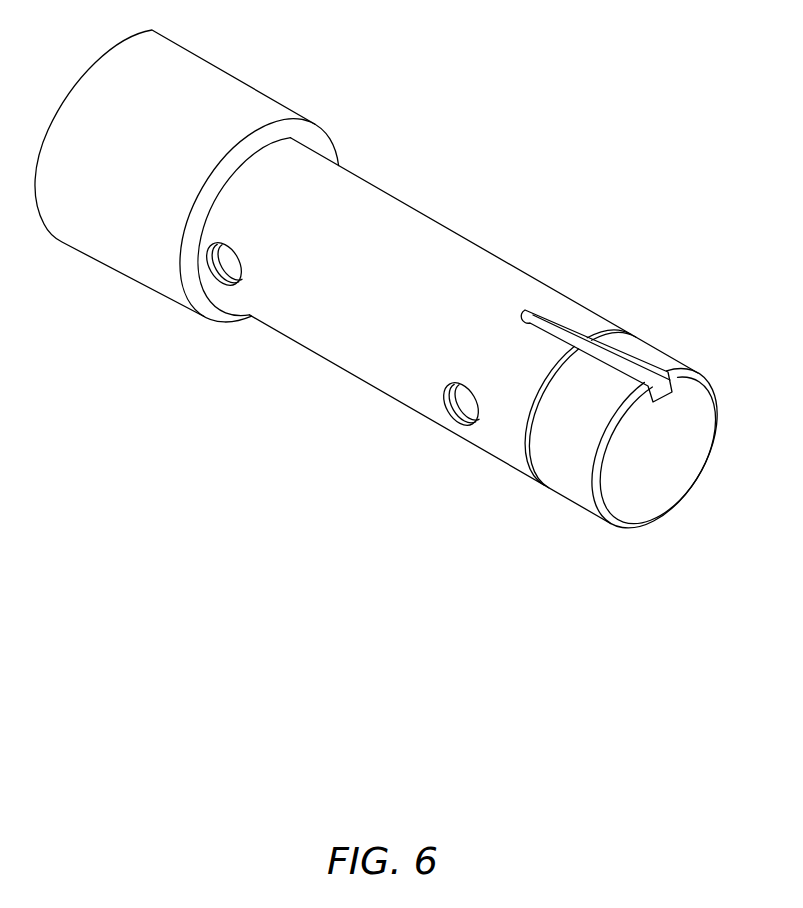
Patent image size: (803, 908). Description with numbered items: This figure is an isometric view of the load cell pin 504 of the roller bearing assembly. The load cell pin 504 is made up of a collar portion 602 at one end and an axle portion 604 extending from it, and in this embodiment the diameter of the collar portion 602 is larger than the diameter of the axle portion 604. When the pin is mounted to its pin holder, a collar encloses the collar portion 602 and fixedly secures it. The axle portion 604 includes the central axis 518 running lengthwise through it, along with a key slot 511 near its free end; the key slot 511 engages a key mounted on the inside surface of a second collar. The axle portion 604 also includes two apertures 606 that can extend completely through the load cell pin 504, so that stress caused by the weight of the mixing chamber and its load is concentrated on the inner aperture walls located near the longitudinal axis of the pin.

The load cell pin 504 is at (373, 333).
The key slot 511 is at (637, 380).
The central axis 518 is at (433, 220).
The collar portion 602 is at (92, 290).
The axle portion 604 is at (442, 329).
The apertures 606 is at (212, 270).